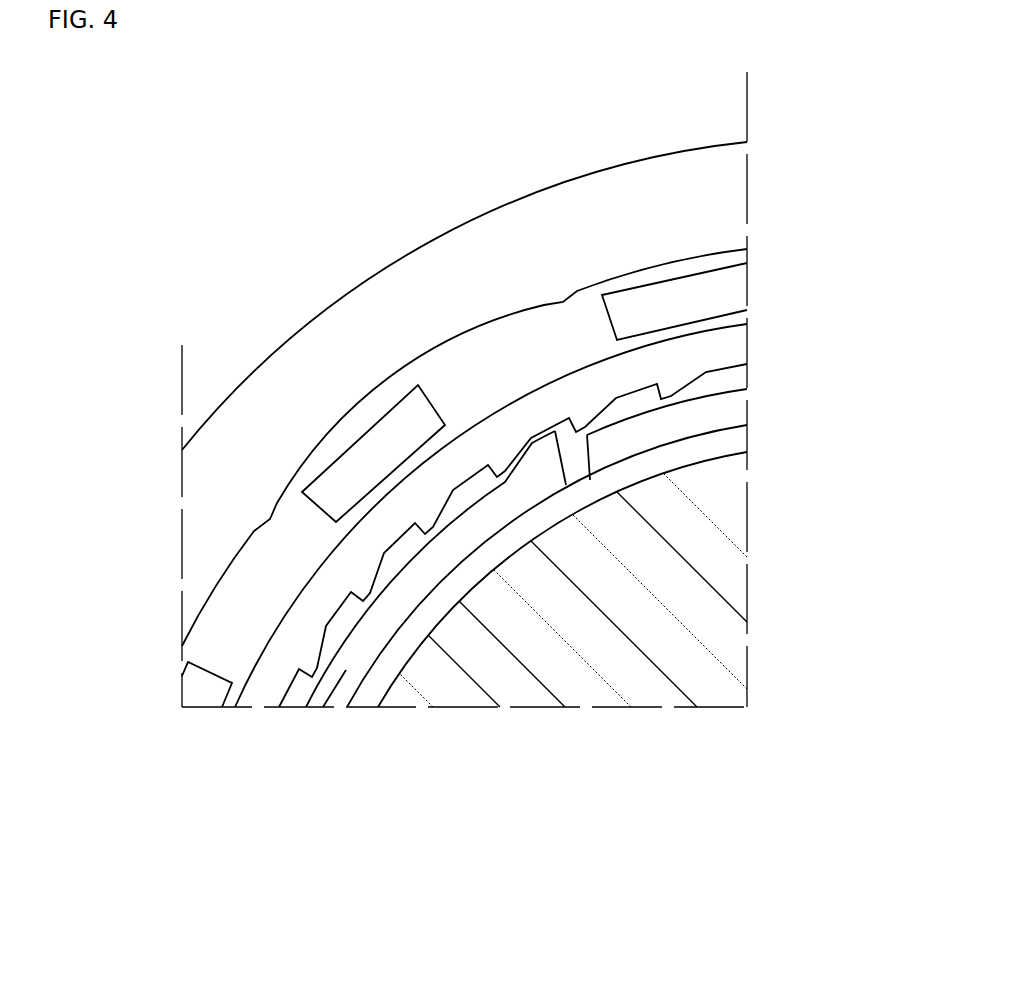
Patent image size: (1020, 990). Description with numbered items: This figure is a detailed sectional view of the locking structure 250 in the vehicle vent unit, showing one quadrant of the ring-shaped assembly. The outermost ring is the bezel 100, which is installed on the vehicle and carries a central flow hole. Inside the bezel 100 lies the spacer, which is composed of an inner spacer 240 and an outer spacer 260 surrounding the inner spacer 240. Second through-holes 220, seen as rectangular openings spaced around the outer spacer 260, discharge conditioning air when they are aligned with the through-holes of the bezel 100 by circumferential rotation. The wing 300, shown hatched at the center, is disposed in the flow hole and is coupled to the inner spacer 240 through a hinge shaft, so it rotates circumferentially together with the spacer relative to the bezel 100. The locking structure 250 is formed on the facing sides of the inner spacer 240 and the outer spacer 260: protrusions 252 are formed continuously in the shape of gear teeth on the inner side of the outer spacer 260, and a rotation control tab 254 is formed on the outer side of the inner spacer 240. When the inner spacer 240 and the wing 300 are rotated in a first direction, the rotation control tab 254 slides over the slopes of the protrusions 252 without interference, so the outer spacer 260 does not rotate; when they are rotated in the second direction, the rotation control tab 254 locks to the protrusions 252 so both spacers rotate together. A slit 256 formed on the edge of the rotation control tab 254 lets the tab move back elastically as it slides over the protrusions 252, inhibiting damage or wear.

The bezel 100 is at (720, 207).
The second through-holes 220 is at (372, 446).
The inner spacer 240 is at (387, 613).
The locking structure 250 is at (543, 417).
The protrusions 252 is at (507, 457).
The rotation control tab 254 is at (535, 468).
The slit 256 is at (577, 455).
The outer spacer 260 is at (575, 333).
The wing 300 is at (722, 636).